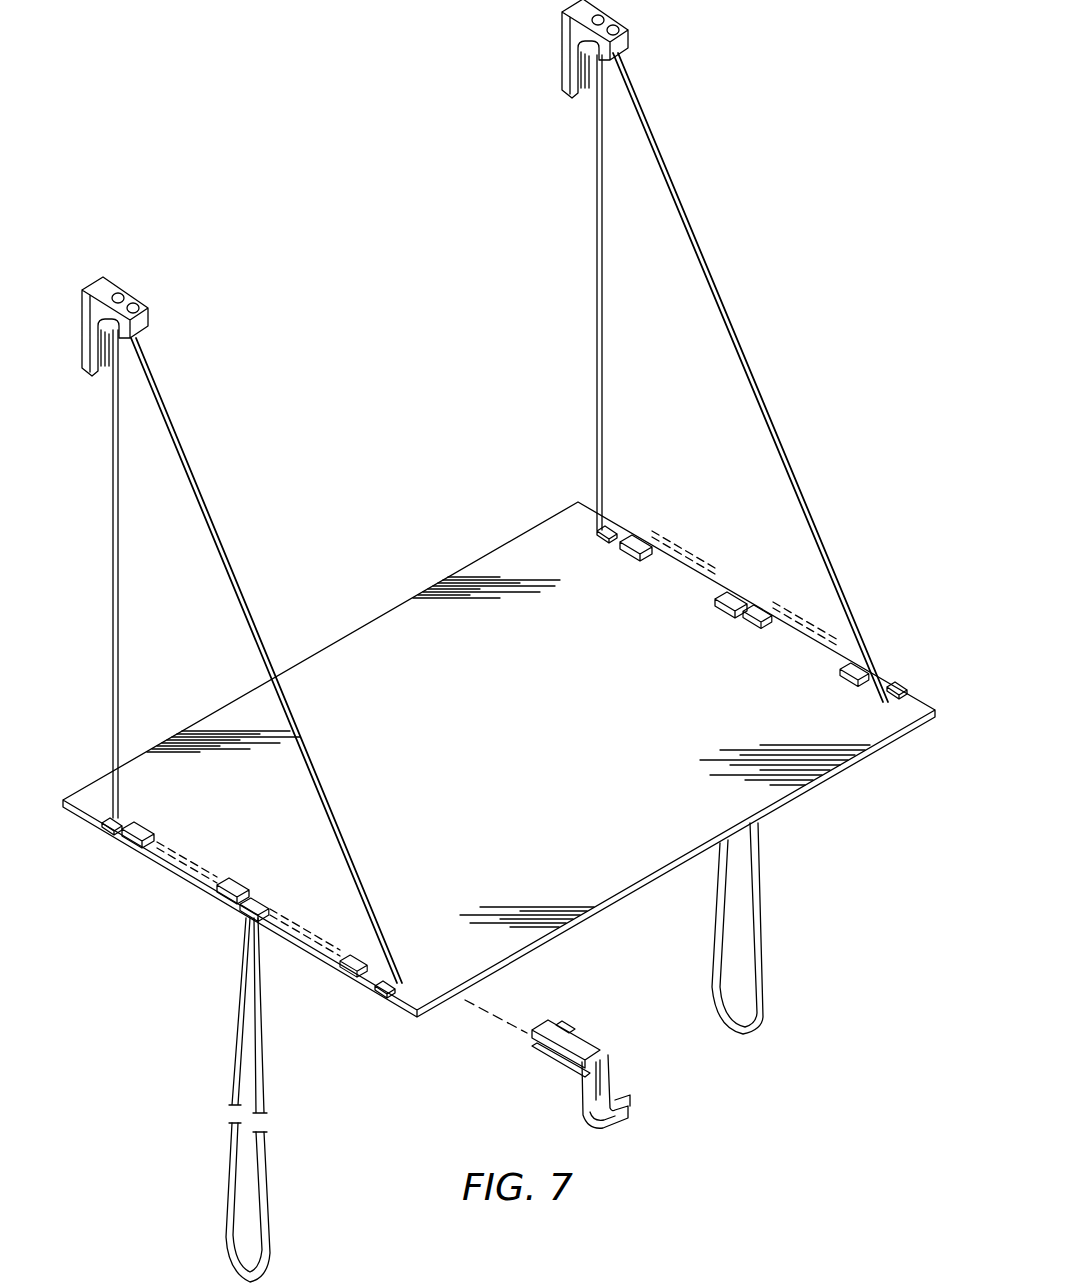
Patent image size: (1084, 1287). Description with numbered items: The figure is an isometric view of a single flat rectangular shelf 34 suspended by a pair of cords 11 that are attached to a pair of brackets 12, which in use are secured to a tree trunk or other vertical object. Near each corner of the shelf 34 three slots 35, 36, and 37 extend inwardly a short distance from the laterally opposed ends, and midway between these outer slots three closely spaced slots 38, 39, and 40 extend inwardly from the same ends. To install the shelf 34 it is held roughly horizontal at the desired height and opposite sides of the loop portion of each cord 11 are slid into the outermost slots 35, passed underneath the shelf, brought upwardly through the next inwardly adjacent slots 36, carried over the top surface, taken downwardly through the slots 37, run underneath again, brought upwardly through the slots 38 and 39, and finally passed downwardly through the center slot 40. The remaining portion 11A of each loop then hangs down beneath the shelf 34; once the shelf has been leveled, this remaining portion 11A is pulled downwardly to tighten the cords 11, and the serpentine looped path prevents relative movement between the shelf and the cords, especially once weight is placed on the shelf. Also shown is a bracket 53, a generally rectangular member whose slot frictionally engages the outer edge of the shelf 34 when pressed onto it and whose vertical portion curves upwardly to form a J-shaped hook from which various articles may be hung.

The cord 11 is at (118, 582).
The remaining portion of the loop portion of the cord 11A is at (268, 1188).
The bracket 12 is at (118, 282).
The shelf 34 is at (492, 738).
The outermost slot 35 is at (103, 817).
The slot 36 is at (124, 820).
The slot 37 is at (136, 848).
The slot 38 is at (217, 890).
The slot 39 is at (258, 900).
The center slot 40 is at (245, 915).
The bracket 53 is at (660, 1042).